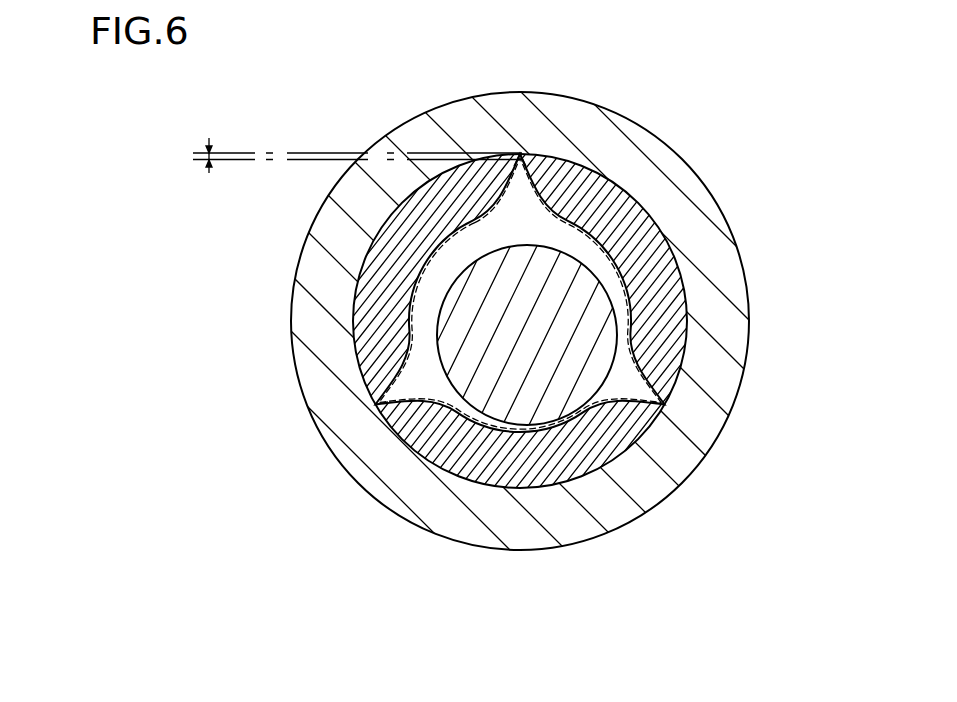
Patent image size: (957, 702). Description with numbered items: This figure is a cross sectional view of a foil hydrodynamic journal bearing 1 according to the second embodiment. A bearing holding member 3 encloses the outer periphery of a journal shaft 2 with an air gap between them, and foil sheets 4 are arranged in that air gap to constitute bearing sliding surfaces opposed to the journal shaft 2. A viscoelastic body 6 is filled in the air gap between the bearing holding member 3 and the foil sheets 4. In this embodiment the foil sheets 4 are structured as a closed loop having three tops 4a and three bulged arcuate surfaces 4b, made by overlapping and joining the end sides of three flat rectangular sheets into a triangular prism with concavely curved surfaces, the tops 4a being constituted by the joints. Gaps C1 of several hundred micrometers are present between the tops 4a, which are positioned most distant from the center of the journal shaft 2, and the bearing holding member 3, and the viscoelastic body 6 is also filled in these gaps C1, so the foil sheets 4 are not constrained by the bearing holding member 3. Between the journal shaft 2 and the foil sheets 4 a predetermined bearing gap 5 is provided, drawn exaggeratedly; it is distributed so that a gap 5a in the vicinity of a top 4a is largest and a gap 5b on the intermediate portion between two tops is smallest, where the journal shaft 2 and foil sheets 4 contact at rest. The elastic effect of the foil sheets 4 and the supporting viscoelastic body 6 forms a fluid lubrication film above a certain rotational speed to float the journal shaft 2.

The foil hydrodynamic journal bearing 1 is at (665, 122).
The journal shaft 2 is at (578, 303).
The bearing holding member 3 is at (727, 328).
The foil sheets 4 is at (632, 199).
The tops 4a is at (522, 170).
The bulged arcuate surfaces 4b is at (445, 233).
The bearing gap 5 is at (540, 232).
The gap in the vicinity of the top 5a is at (448, 397).
The gap on the intermediate portion 5b is at (569, 419).
The viscoelastic body 6 is at (672, 350).
The gaps C1 is at (348, 177).